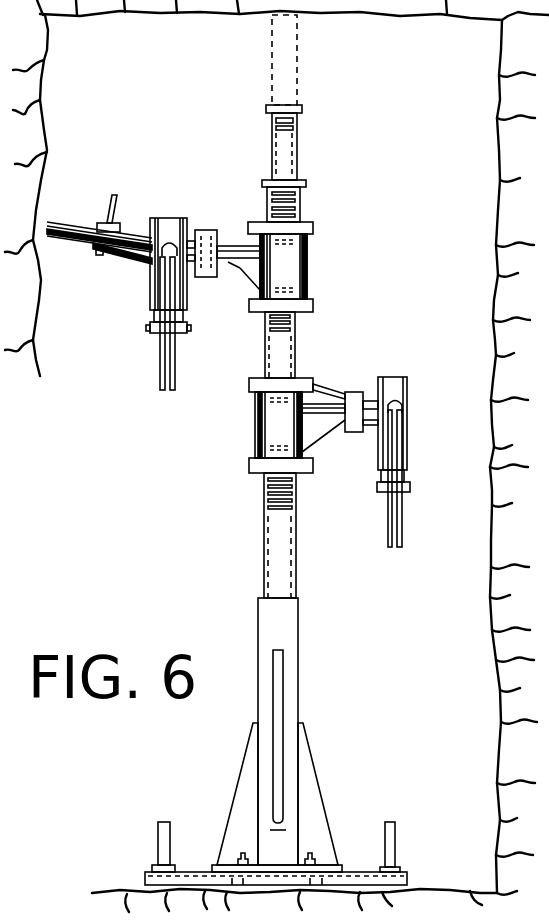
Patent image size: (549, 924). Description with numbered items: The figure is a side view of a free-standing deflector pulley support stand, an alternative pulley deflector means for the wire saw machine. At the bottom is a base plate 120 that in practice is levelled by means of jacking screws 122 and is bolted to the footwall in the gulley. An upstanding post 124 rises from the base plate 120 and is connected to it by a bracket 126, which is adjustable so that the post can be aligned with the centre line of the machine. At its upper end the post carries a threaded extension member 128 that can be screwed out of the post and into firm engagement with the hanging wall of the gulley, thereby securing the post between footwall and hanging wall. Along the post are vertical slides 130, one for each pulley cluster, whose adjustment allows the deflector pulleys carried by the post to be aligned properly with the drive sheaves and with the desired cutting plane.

The base plate 120 is at (352, 872).
The jacking screws 122 is at (158, 823).
The upstanding post 124 is at (228, 318).
The bracket 126 is at (320, 767).
The threaded extension member 128 is at (297, 165).
The vertical slides 130 is at (307, 270).